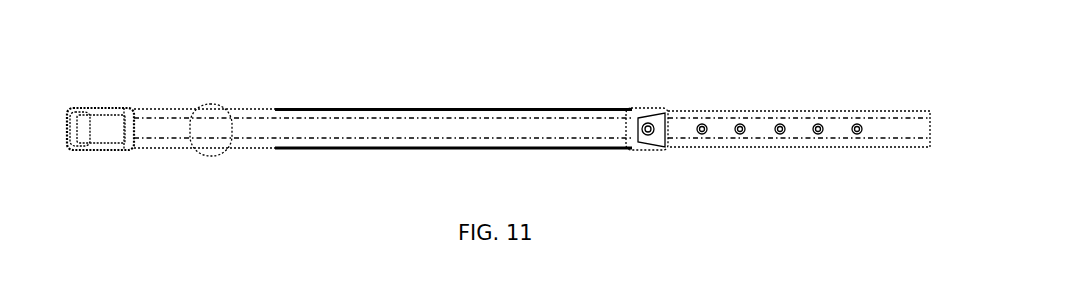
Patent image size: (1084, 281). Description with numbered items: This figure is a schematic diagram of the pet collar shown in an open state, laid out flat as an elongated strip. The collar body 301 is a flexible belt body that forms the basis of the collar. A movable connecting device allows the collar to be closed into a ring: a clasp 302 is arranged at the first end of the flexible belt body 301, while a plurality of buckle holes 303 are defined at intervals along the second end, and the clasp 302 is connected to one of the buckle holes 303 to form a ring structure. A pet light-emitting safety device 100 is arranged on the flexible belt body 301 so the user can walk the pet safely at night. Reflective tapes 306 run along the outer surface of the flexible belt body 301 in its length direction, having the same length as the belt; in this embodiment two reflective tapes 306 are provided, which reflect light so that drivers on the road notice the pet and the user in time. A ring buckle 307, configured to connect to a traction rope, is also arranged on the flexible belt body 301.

The pet light-emitting safety device 100 is at (643, 108).
The collar body 301 is at (727, 110).
The clasp 302 is at (87, 125).
The buckle holes 303 is at (857, 125).
The reflective tapes 306 is at (457, 118).
The ring buckle 307 is at (212, 105).